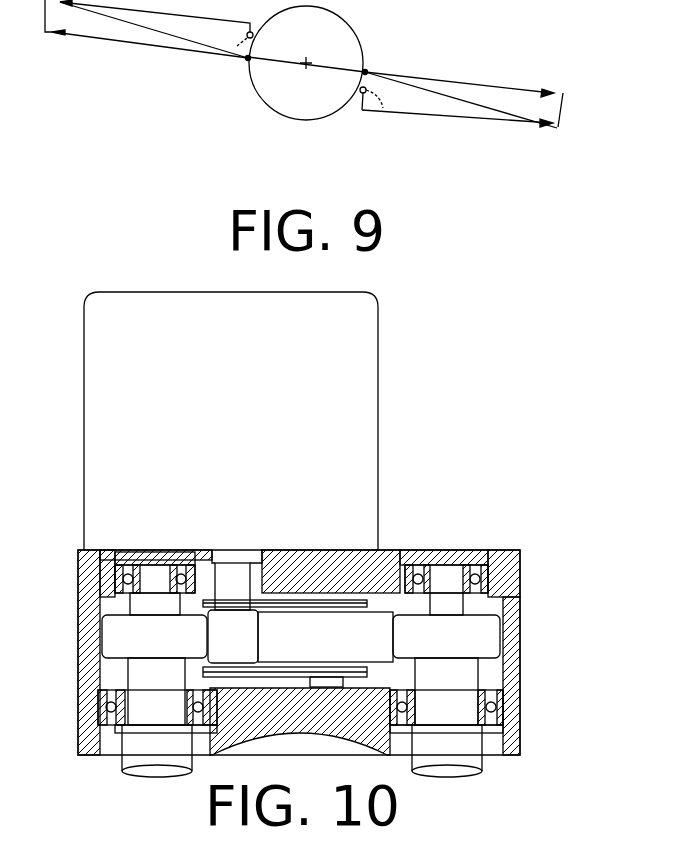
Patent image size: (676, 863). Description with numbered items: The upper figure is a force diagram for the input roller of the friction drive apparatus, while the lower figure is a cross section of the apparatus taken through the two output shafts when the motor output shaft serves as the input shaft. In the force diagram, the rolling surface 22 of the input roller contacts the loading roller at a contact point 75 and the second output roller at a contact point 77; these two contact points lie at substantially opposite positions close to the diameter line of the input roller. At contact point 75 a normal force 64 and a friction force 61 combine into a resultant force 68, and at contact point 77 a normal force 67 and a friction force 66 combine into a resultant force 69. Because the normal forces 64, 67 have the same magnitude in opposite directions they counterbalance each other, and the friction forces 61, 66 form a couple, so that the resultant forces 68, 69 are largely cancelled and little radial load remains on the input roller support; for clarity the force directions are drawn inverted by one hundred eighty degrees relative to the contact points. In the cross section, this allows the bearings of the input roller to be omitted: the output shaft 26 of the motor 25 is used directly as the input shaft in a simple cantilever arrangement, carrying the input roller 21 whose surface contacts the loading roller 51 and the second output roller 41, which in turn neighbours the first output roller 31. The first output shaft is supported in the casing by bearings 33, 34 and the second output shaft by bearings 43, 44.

In FIG. 9, the rolling surface of the input roller 22 is at (308, 121).
In FIG. 9, the friction force 61 is at (366, 93).
In FIG. 9, the normal force 64 is at (533, 90).
In FIG. 9, the friction force 66 is at (232, 57).
In FIG. 9, the normal force 67 is at (143, 40).
In FIG. 9, the resultant force 68 is at (493, 110).
In FIG. 9, the resultant force 69 is at (97, 12).
In FIG. 9, the contact point 75 is at (358, 78).
In FIG. 9, the contact point 77 is at (248, 58).
In FIG. 10, the input roller 21 is at (218, 657).
In FIG. 10, the motor 25 is at (117, 447).
In FIG. 10, the output shaft of the motor 26 is at (197, 550).
In FIG. 10, the first output roller 31 is at (490, 628).
In FIG. 10, the bearing 33 is at (488, 572).
In FIG. 10, the bearing 34 is at (497, 695).
In FIG. 10, the second output roller 41 is at (117, 633).
In FIG. 10, the bearing 43 is at (115, 572).
In FIG. 10, the bearing 44 is at (113, 697).
In FIG. 10, the loading roller 51 is at (368, 623).